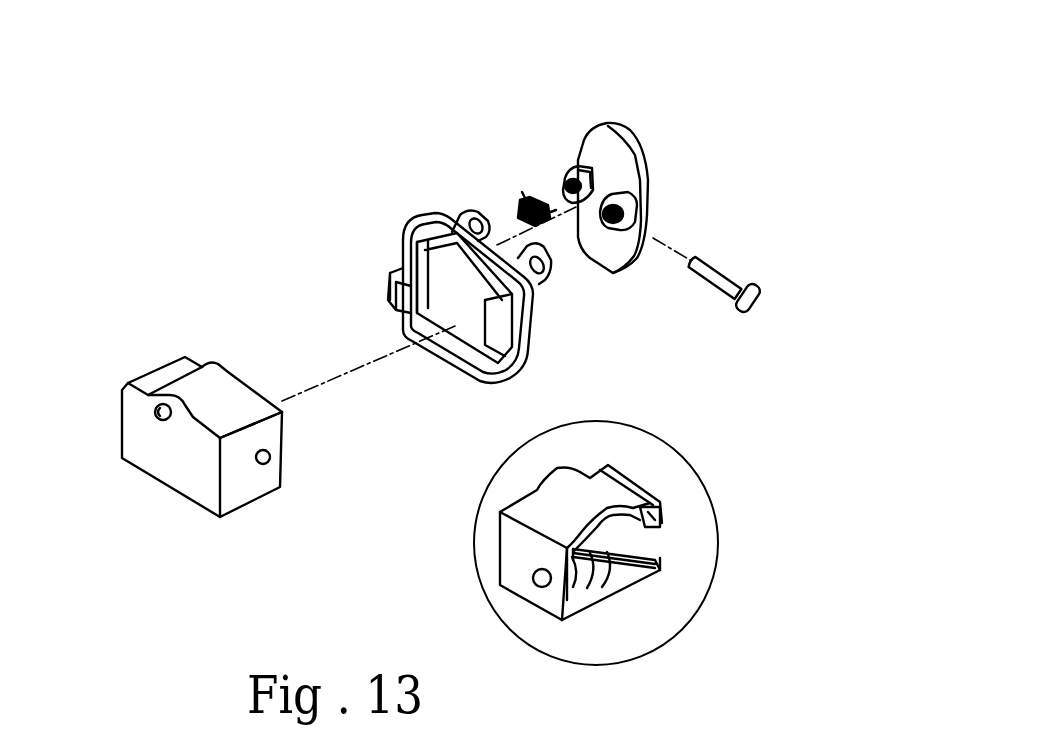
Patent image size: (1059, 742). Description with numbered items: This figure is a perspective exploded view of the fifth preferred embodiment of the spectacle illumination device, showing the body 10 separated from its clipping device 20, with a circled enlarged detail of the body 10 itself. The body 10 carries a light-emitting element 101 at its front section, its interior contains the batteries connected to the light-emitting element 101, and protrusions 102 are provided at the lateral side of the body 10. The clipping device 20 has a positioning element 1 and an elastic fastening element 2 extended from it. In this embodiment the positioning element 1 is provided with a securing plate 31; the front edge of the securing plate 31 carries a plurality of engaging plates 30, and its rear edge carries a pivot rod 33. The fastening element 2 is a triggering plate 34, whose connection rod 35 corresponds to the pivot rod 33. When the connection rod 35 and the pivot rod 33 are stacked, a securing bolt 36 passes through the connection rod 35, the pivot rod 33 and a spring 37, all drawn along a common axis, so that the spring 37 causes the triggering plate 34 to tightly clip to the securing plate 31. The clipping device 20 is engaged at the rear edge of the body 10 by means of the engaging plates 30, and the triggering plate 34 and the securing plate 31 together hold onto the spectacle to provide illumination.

The positioning element 1 is at (435, 269).
The elastic fastening element 2 is at (636, 144).
The body 10 is at (168, 495).
The clipping device 20 is at (435, 279).
The engaging plate 30 is at (397, 277).
The securing plate 31 is at (468, 372).
The pivot rod 33 is at (477, 210).
The triggering plate 34 is at (610, 123).
The connection rod 35 is at (570, 168).
The securing bolt 36 is at (729, 274).
The spring 37 is at (517, 207).
The light-emitting element 101 is at (157, 418).
The protrusion 102 is at (262, 468).